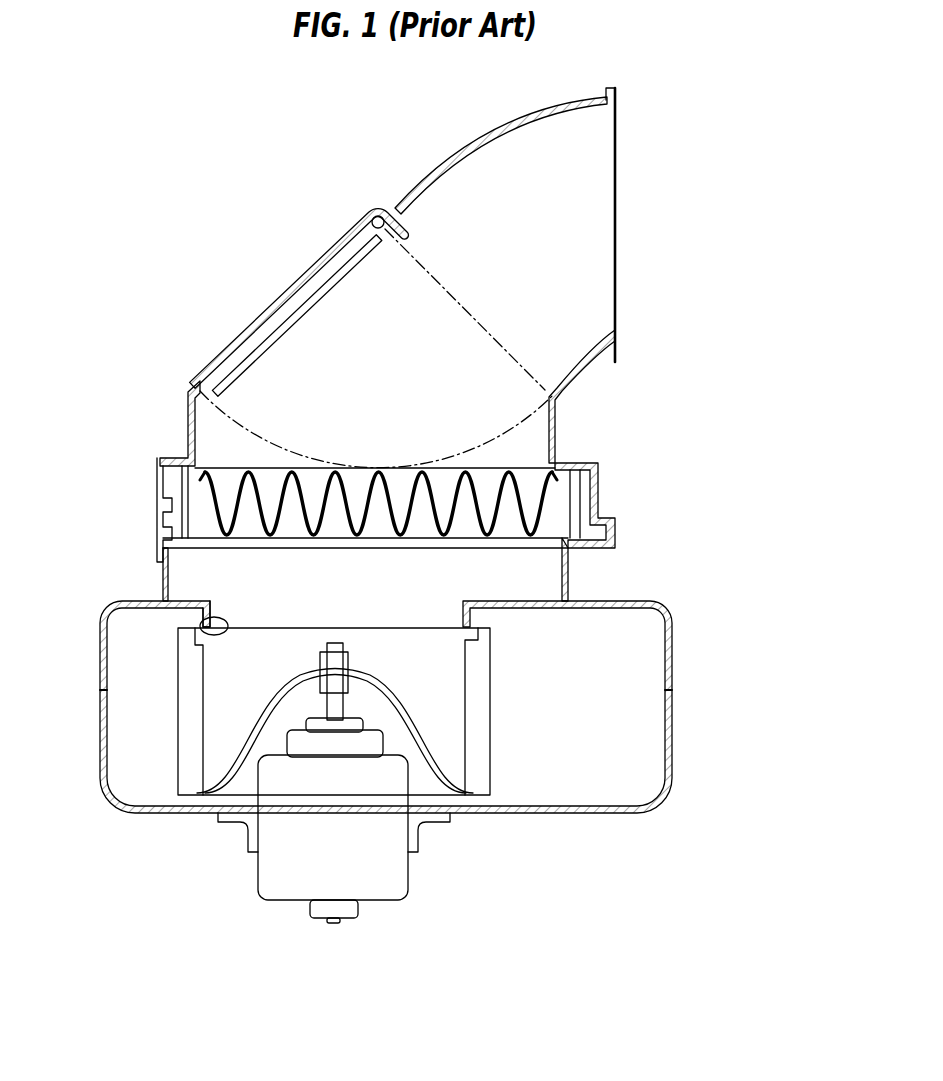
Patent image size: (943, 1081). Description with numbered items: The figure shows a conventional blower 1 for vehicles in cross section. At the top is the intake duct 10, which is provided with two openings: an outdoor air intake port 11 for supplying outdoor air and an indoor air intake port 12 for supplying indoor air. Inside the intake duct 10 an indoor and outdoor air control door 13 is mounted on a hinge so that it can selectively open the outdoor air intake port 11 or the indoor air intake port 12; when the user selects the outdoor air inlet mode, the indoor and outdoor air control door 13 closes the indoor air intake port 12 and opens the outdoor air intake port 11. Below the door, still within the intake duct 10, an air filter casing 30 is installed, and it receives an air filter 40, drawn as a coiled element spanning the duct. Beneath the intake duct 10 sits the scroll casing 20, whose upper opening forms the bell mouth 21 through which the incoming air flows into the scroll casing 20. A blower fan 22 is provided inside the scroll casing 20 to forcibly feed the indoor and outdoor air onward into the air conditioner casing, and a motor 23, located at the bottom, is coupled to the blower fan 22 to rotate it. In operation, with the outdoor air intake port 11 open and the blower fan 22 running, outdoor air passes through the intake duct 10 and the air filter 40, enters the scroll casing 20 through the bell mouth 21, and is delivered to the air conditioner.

The blower 1 is at (664, 483).
The intake duct 10 is at (555, 433).
The outdoor air intake port 11 is at (598, 228).
The indoor air intake port 12 is at (293, 285).
The indoor and outdoor air control door 13 is at (252, 347).
The scroll casing 20 is at (668, 648).
The bell mouth 21 is at (218, 633).
The blower fan 22 is at (485, 710).
The motor 23 is at (388, 862).
The air filter casing 30 is at (177, 528).
The air filter 40 is at (253, 489).